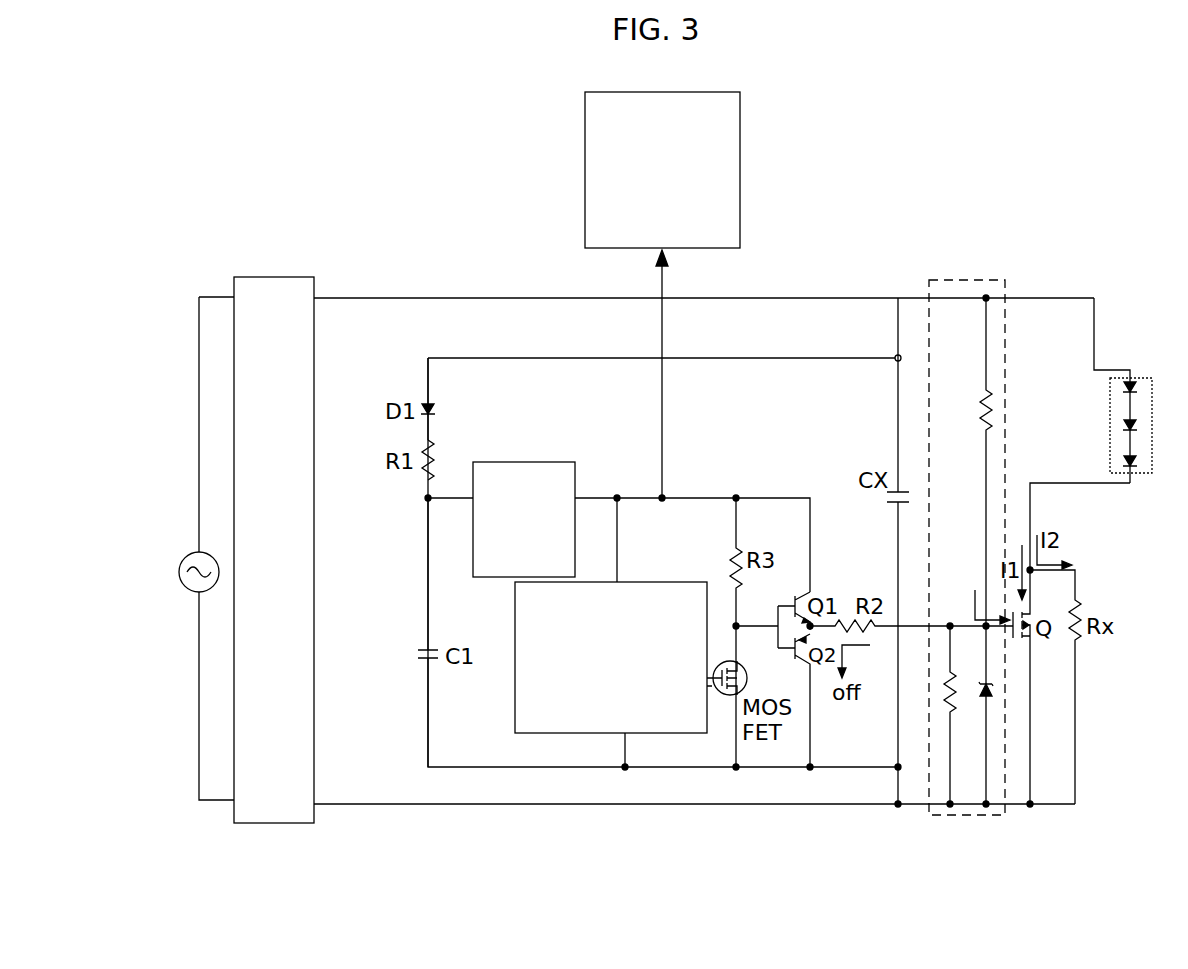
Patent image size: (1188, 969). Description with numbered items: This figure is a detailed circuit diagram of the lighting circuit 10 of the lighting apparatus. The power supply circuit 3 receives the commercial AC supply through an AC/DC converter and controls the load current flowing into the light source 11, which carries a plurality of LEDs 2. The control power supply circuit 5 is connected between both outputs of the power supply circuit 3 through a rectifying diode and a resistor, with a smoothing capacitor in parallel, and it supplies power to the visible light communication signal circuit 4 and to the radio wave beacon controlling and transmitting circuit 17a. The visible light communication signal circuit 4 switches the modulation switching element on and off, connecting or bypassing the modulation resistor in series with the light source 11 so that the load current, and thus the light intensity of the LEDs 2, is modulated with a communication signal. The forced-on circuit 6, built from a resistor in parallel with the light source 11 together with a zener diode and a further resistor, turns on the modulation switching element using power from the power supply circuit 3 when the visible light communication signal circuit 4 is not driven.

The lighting circuit 10 is at (176, 230).
The power supply circuit 3 is at (314, 386).
The radio wave beacon controlling and transmitting circuit 17a is at (740, 218).
The control power supply circuit 5 is at (530, 462).
The visible light communication signal circuit 4 is at (660, 582).
The forced-on circuit 6 is at (975, 282).
The light source 11 is at (1136, 380).
The LEDs 2 is at (1138, 388).